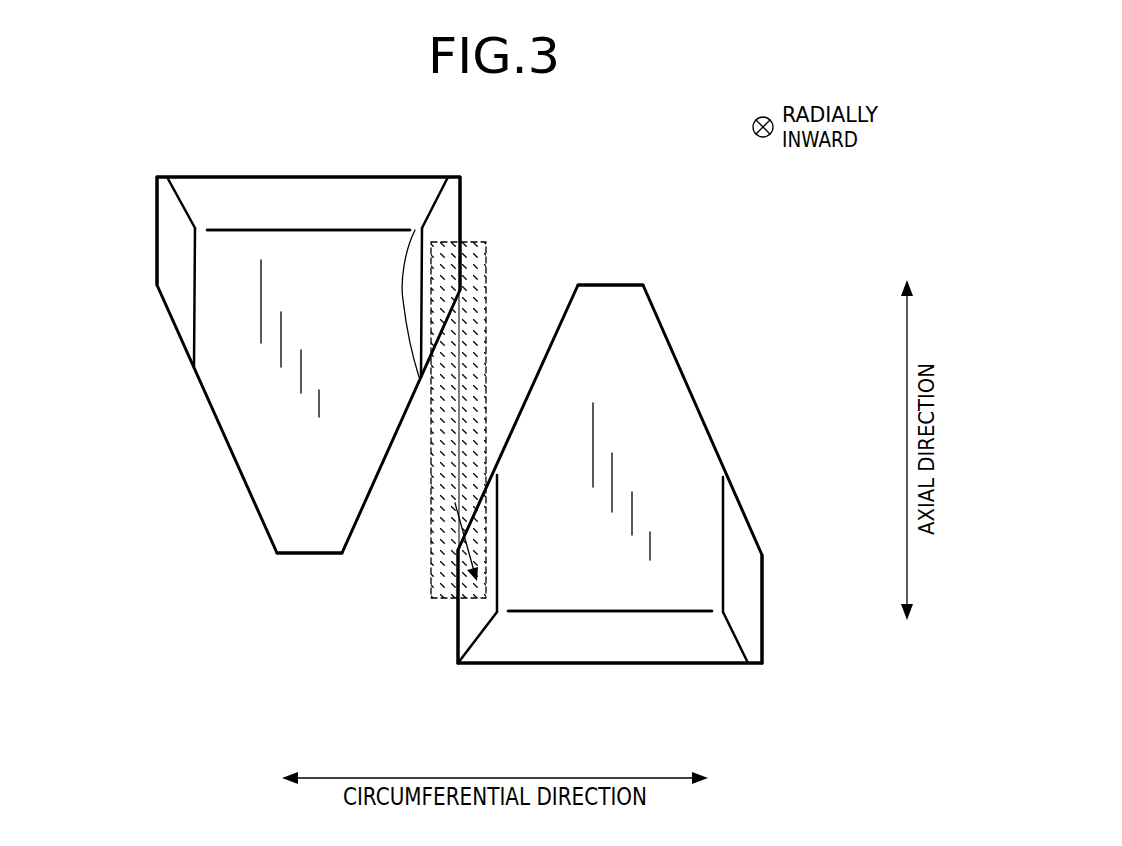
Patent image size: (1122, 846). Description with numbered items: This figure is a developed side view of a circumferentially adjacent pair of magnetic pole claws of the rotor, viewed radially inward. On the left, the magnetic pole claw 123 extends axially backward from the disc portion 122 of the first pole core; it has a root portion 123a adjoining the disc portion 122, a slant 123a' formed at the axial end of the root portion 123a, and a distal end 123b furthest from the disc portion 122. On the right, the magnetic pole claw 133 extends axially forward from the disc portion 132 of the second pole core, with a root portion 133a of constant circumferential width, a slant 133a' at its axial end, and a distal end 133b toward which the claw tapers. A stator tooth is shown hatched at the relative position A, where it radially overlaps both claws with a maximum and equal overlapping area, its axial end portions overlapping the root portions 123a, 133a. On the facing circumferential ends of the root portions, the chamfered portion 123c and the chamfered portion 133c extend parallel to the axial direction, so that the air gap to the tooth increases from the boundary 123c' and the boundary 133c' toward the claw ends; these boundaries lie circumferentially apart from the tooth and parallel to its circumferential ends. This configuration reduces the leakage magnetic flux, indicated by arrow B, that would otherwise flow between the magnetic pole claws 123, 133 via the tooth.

The disc portion 122 is at (233, 177).
The magnetic pole claw 123 is at (233, 388).
The root portion 123a is at (241, 200).
The slant 123a' is at (308, 172).
The distal end 123b is at (308, 555).
The chamfered portion 123c is at (327, 260).
The boundary 123c' is at (409, 256).
The disc portion 132 is at (665, 663).
The magnetic pole claw 133 is at (663, 420).
The root portion 133a is at (693, 662).
The slant 133a' is at (610, 683).
The distal end 133b is at (617, 285).
The chamfered portion 133c is at (605, 584).
The boundary 133c' is at (515, 606).
The relative position A is at (488, 253).
The arrow indicating leakage magnetic flux B is at (455, 503).